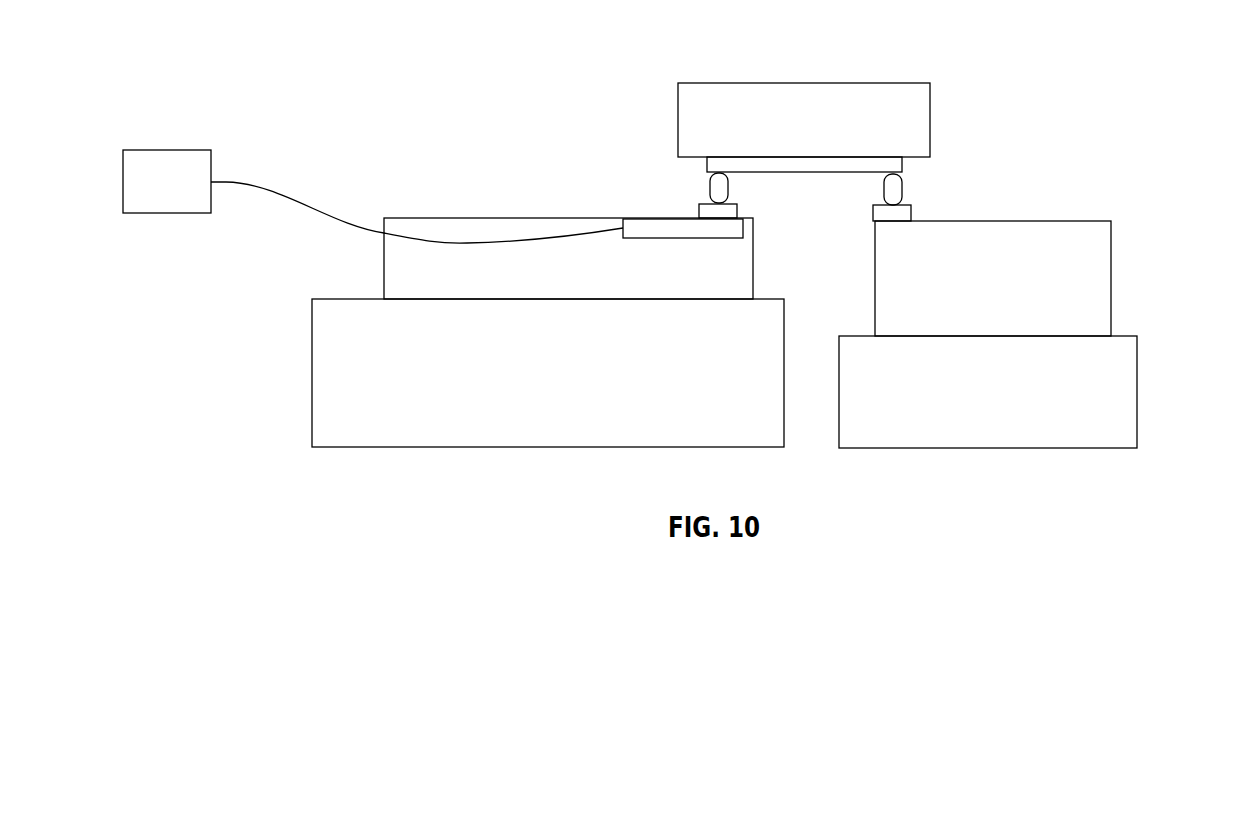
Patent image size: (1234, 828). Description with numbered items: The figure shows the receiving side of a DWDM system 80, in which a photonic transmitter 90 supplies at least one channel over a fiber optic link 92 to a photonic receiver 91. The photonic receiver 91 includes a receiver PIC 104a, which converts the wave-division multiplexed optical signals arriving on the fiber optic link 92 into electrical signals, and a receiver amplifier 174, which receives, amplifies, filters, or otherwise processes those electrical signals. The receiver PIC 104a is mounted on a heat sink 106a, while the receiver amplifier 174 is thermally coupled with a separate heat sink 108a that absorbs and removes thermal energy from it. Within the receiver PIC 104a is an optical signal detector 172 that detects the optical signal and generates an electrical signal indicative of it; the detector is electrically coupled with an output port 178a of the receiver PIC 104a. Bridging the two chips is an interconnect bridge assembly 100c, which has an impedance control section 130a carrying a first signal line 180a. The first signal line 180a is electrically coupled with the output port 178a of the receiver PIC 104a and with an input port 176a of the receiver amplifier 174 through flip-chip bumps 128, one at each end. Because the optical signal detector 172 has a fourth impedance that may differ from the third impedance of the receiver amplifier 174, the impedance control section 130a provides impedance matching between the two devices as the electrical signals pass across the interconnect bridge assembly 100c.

The DWDM system 80 is at (215, 106).
The photonic transmitter 90 is at (151, 149).
The photonic receiver 91 is at (405, 448).
The fiber optic link 92 is at (228, 180).
The interconnect bridge assembly 100c is at (857, 83).
The receiver PIC 104a is at (384, 258).
The heat sink 106a is at (312, 405).
The heat sink 108a is at (1138, 372).
The flip-chip bumps 128 is at (724, 194).
The impedance control section 130a is at (748, 174).
The optical signal detector 172 is at (677, 240).
The receiver amplifier 174 is at (1112, 290).
The input port 176a is at (913, 212).
The output port 178a is at (700, 212).
The first signal line 180a is at (797, 163).